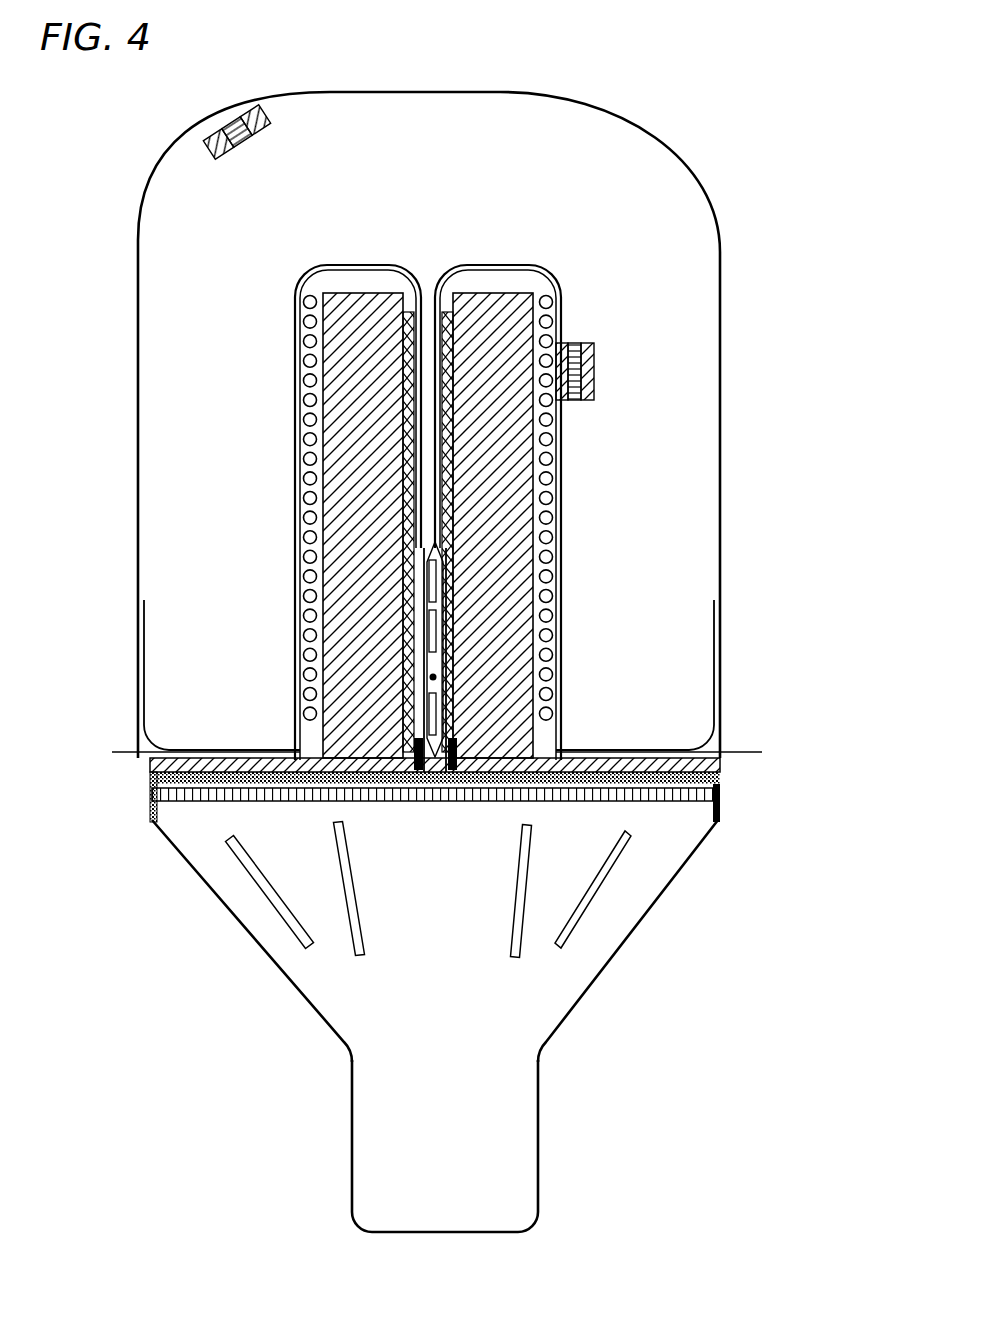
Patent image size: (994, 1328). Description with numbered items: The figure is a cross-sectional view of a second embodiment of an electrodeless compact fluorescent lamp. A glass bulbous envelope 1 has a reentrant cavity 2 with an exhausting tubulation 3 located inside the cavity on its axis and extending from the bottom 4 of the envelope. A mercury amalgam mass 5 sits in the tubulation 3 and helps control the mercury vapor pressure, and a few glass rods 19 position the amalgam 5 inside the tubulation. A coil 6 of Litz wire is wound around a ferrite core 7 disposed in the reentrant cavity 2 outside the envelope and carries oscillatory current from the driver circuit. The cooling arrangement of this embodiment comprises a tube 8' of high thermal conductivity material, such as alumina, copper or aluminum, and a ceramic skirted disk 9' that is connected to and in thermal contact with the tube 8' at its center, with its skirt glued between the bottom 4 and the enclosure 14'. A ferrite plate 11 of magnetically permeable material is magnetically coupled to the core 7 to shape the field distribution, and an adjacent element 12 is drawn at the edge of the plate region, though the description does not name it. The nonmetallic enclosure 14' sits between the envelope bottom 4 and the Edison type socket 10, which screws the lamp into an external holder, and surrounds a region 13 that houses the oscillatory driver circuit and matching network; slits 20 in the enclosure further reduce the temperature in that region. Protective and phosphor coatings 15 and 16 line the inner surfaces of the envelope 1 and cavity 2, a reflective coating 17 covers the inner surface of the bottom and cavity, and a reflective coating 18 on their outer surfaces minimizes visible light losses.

The bulbous envelope 1 is at (720, 259).
The reentrant cavity 2 is at (298, 318).
The exhausting tubulation 3 is at (437, 494).
The bottom 4 is at (645, 747).
The mercury amalgam mass 5 is at (433, 677).
The coil 6 is at (300, 437).
The ferrite core 7 is at (510, 582).
The tube 8' is at (259, 532).
The skirted disk 9' is at (389, 781).
The Edison type socket 10 is at (538, 1121).
The ferrite plate 11 is at (717, 774).
The support layer 12 is at (190, 797).
The region 13 is at (293, 850).
The enclosure 14' is at (428, 941).
The protective coating 15 is at (250, 110).
The phosphor coating 16 is at (258, 136).
The reflective coating 17 is at (573, 400).
The reflective coating 18 is at (437, 754).
The glass rods 19 is at (432, 582).
The slits 20 is at (345, 900).